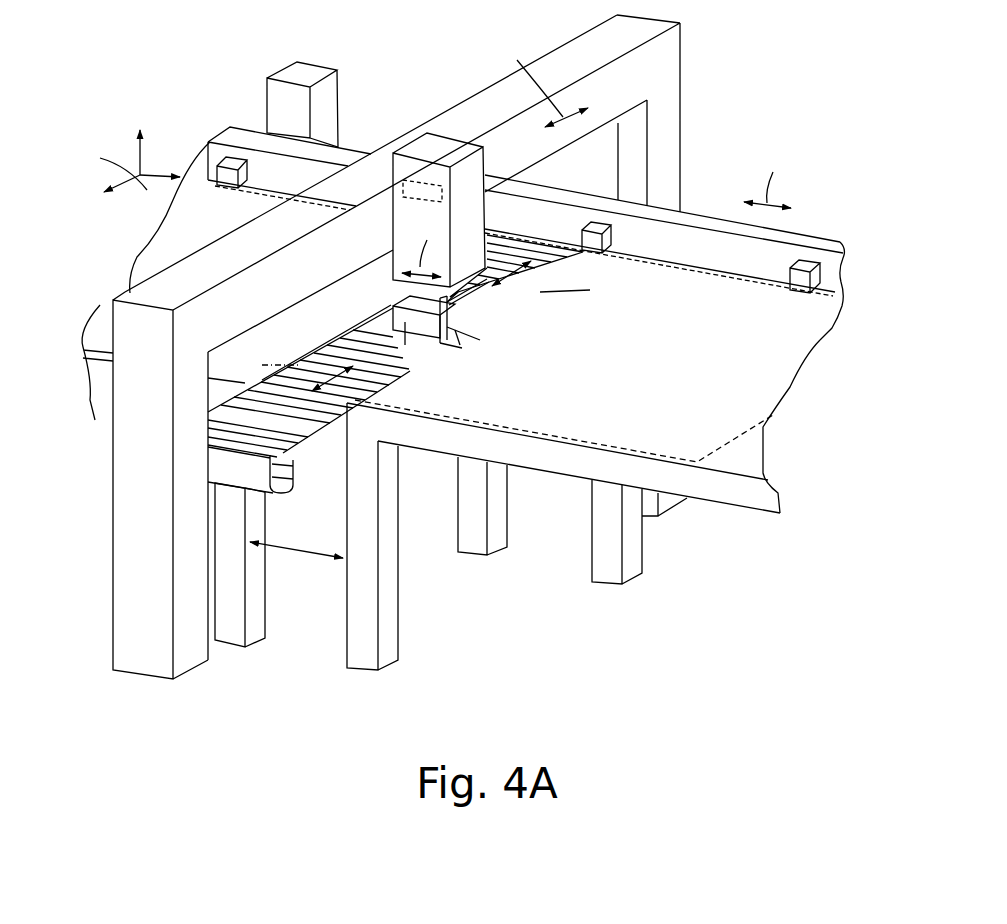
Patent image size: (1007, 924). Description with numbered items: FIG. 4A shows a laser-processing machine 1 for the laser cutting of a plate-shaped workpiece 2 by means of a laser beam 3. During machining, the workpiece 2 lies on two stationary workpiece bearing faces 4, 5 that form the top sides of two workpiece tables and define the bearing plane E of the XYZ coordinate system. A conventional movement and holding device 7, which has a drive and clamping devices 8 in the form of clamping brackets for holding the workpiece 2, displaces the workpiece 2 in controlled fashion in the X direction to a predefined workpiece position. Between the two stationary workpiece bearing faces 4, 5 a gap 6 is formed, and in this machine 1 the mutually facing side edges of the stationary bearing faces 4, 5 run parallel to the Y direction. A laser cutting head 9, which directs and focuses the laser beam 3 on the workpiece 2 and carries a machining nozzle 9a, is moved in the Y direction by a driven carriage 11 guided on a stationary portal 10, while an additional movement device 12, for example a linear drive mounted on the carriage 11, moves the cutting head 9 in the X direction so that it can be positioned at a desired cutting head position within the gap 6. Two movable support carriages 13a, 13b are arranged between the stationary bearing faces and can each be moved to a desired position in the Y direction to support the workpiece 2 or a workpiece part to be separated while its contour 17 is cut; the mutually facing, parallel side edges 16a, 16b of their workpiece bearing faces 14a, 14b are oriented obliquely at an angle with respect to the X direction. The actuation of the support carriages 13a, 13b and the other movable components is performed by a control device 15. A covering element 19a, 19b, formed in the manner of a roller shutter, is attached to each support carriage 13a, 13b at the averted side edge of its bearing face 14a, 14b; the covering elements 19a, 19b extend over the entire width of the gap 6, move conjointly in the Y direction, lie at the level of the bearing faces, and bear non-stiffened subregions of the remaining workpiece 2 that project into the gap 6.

The machine 1 is at (784, 101).
The plate-shaped workpiece 2 is at (552, 440).
The laser beam 3 is at (448, 322).
The stationary workpiece bearing face 4 is at (100, 383).
The stationary workpiece bearing face 5 is at (737, 458).
The gap 6 is at (327, 285).
The movement and holding device 7 is at (703, 253).
The clamping devices 8 is at (821, 258).
The laser cutting head 9 is at (433, 292).
The machining nozzle 9a is at (505, 315).
The stationary portal 10 is at (193, 643).
The driven carriage 11 is at (417, 163).
The additional movement device 12 is at (403, 180).
The support carriage 13a is at (404, 386).
The support carriage 13b is at (520, 323).
The workpiece bearing face 14a is at (383, 347).
The workpiece bearing face 14b is at (425, 300).
The control device 15 is at (282, 107).
The side edge 16a is at (408, 345).
The side edge 16b is at (458, 345).
The contour 17 is at (505, 337).
The covering element 19a is at (207, 425).
The covering element 19b is at (550, 270).